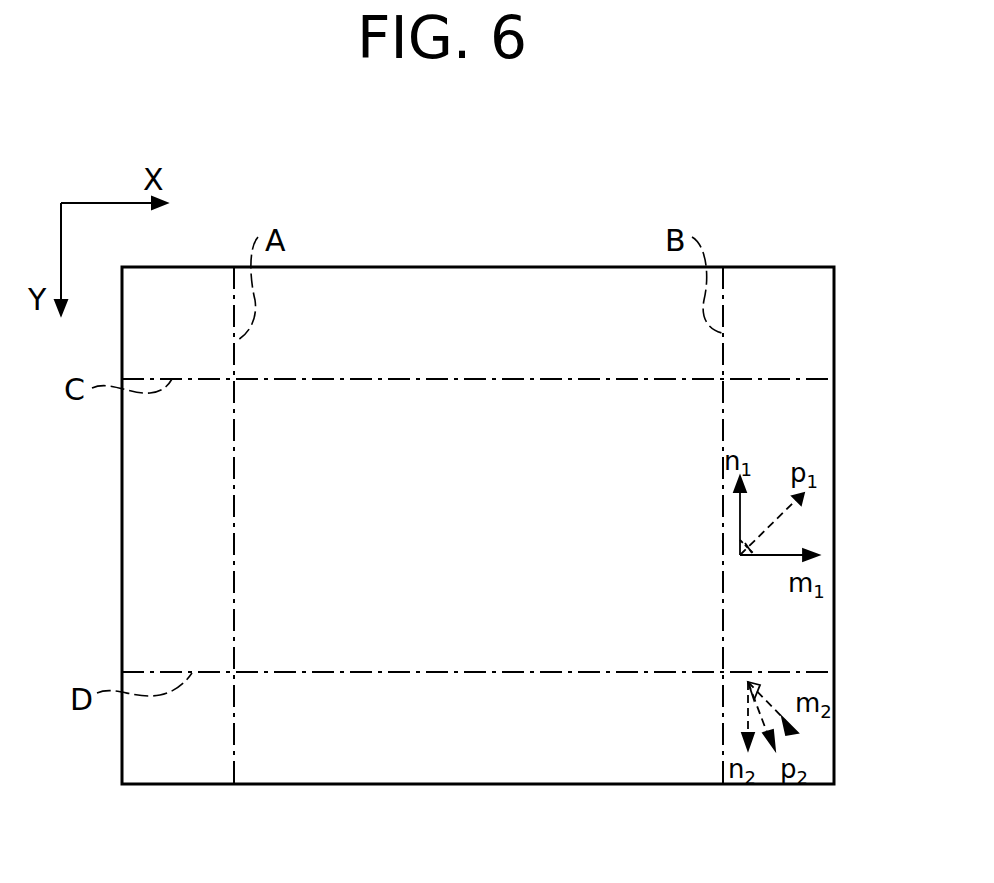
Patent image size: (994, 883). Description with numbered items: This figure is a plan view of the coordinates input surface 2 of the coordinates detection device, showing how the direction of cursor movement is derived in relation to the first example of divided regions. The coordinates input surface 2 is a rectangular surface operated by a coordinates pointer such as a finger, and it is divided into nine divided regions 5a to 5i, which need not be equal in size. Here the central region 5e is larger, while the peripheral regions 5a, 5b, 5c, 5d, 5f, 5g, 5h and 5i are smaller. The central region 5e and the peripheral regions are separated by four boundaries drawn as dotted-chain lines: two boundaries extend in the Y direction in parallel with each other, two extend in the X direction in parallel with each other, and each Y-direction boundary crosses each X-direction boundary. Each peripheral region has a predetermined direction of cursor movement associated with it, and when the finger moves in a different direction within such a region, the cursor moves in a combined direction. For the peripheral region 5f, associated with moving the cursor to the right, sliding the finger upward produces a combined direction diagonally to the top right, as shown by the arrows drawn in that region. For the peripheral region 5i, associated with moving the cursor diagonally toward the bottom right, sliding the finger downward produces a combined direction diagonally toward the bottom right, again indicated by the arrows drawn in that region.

The coordinates input surface 2 is at (775, 238).
The divided region 5a is at (205, 292).
The divided region 5b is at (587, 293).
The divided region 5c is at (812, 335).
The divided region 5d is at (140, 483).
The divided region 5e is at (407, 490).
The peripheral region 5f is at (808, 410).
The divided region 5g is at (168, 737).
The divided region 5h is at (602, 738).
The peripheral region 5i is at (817, 682).